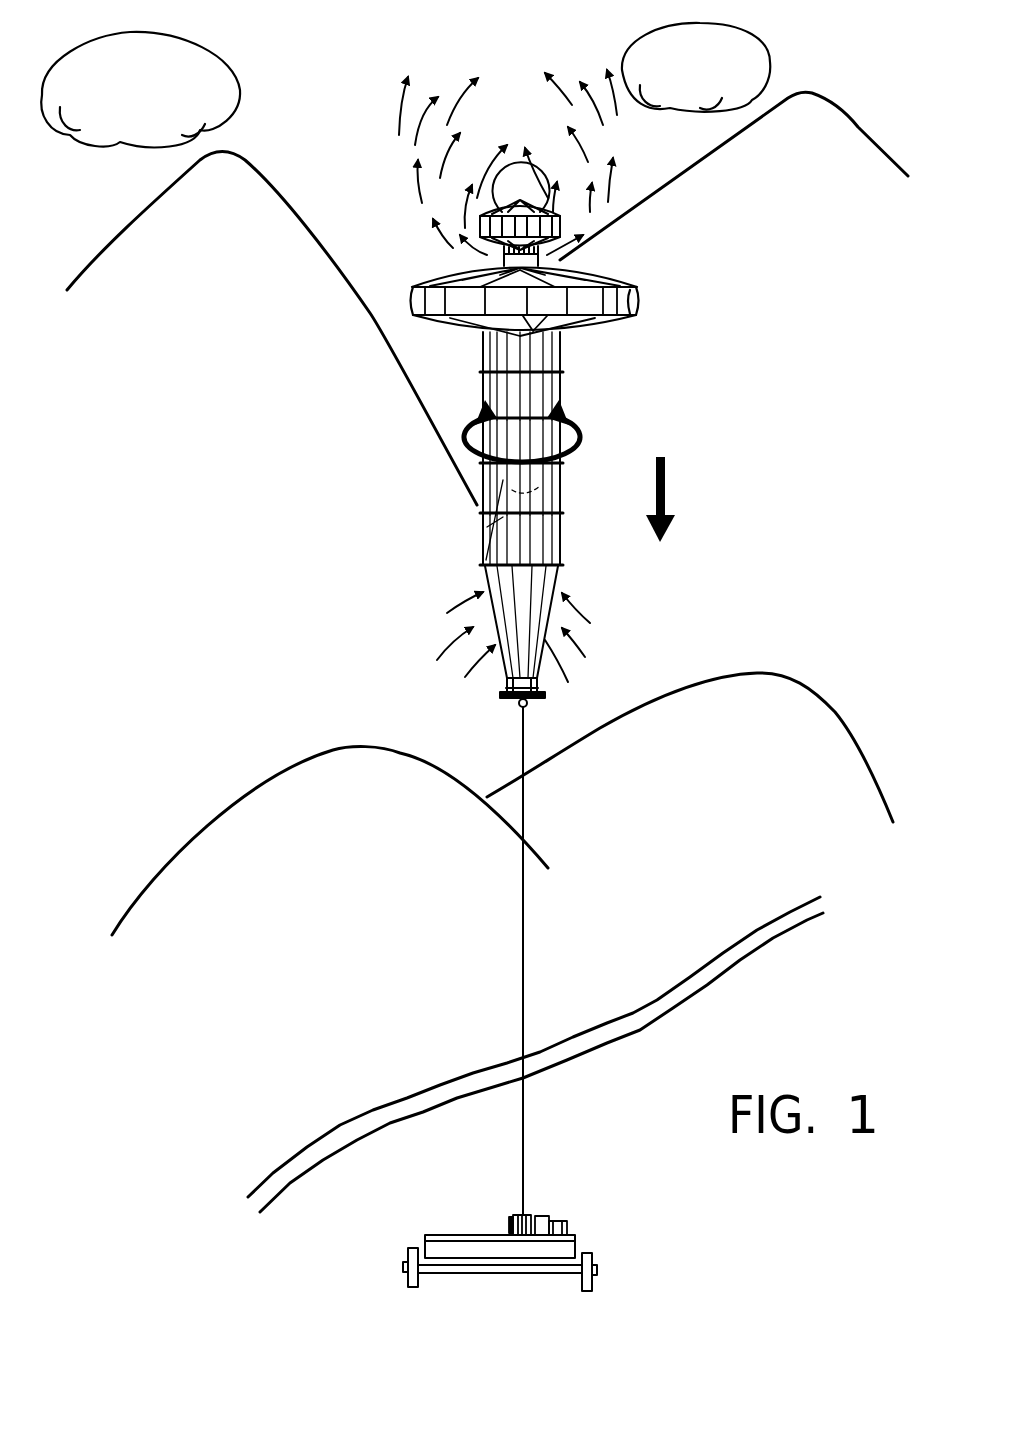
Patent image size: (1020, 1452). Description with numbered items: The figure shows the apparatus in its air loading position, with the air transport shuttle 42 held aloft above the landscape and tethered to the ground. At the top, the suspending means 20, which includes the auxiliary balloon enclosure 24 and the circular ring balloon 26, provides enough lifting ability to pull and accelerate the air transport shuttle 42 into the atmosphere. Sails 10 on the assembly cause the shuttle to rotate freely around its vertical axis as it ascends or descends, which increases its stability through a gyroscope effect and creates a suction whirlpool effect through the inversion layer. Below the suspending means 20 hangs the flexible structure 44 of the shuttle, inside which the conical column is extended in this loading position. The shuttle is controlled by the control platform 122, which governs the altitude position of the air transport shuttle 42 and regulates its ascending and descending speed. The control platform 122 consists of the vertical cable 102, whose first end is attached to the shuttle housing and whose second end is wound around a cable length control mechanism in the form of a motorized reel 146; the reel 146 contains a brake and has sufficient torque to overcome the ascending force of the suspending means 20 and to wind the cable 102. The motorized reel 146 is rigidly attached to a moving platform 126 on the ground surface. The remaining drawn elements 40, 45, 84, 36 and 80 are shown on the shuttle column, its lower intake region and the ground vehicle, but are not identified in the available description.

The sails 10 is at (560, 210).
The auxiliary balloon enclosure 24 is at (568, 224).
The circular ring balloon 26 is at (640, 290).
The suspending means 20 is at (638, 312).
The flexible structure 44 is at (535, 397).
The support column 40 is at (560, 490).
The air transport shuttle 42 is at (548, 541).
The column side wall 45 is at (487, 527).
The conical air intake 84 is at (563, 580).
The base hub and plate 36 is at (540, 687).
The vertical cable 102 is at (524, 938).
The ground vehicle 80 is at (578, 1248).
The moving platform 126 is at (447, 1266).
The motorized reel 146 is at (513, 1222).
The control platform 122 is at (538, 1222).